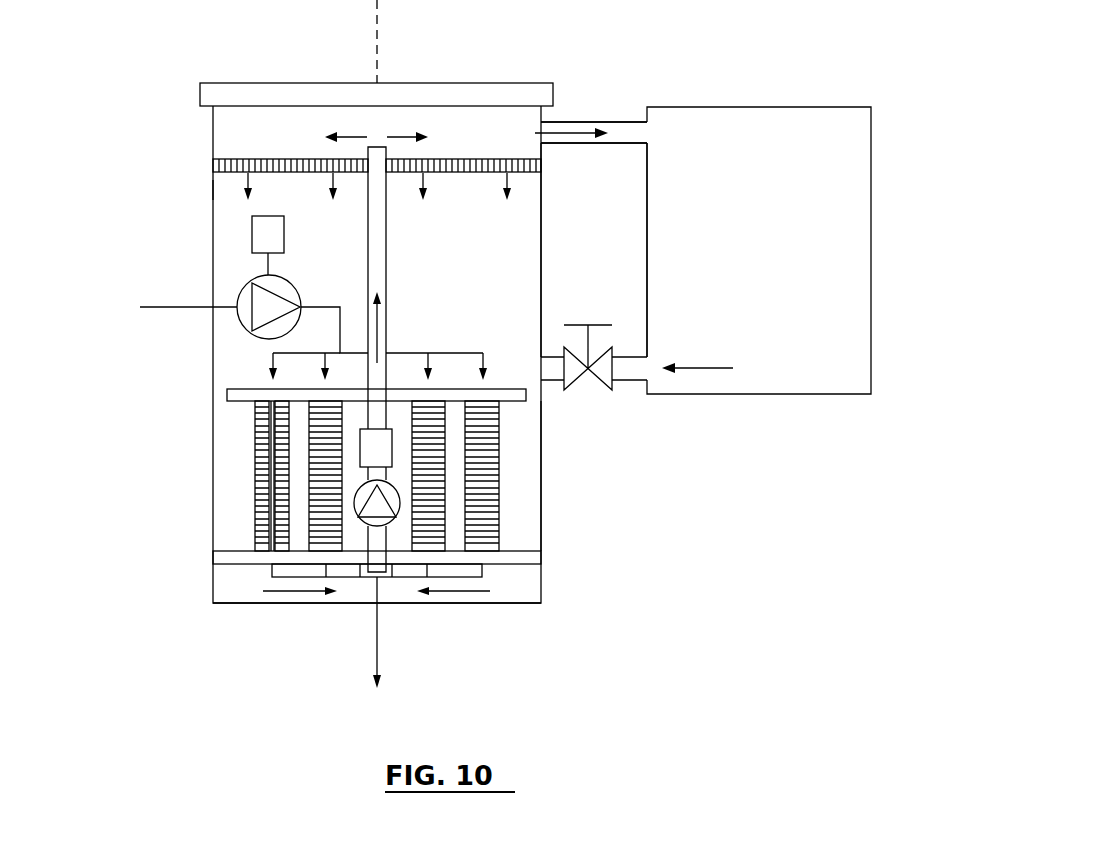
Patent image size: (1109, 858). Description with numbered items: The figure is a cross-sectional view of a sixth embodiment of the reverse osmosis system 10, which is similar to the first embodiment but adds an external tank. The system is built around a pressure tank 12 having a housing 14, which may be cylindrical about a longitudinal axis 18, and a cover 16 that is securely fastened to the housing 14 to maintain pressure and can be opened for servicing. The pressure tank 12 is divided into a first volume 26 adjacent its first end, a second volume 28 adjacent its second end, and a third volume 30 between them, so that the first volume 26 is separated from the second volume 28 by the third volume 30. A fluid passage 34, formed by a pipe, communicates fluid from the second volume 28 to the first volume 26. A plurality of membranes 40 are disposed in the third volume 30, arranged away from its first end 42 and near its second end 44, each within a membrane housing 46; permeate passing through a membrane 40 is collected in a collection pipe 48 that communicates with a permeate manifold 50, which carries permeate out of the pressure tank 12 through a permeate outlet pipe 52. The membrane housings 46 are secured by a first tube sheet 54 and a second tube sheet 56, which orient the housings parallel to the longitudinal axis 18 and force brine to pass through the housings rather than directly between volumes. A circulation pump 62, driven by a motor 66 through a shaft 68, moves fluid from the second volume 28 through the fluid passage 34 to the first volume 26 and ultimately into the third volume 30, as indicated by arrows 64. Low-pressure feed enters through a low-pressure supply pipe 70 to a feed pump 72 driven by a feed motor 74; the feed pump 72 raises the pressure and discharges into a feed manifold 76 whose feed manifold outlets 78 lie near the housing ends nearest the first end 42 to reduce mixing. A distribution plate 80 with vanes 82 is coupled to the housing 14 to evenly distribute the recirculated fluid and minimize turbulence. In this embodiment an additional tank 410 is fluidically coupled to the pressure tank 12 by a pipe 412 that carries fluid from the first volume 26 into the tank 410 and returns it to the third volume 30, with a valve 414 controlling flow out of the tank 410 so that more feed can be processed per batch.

The reverse osmosis system 10 is at (195, 67).
The pressure tank 12 is at (201, 113).
The housing 14 is at (213, 189).
The cover 16 is at (228, 93).
The longitudinal axis 18 is at (380, 17).
The first volume 26 is at (445, 114).
The second volume 28 is at (227, 593).
The third volume 30 is at (521, 225).
The fluid passage 34 is at (387, 260).
The membranes 40 is at (258, 421).
The first end 42 is at (523, 197).
The second end 44 is at (522, 533).
The membrane housing 46 is at (500, 425).
The collection pipe 48 is at (270, 455).
The permeate manifold 50 is at (347, 578).
The permeate outlet pipe 52 is at (380, 656).
The first tube sheet 54 is at (512, 393).
The second tube sheet 56 is at (523, 558).
The circulation pump 62 is at (400, 530).
The arrows 64 is at (350, 136).
The motor 66 is at (360, 440).
The shaft 68 is at (355, 505).
The low-pressure supply pipe 70 is at (165, 306).
The feed pump 72 is at (293, 288).
The feed motor 74 is at (252, 222).
The feed manifold 76 is at (334, 307).
The feed manifold outlets 78 is at (272, 360).
The distribution plate 80 is at (277, 163).
The vanes 82 is at (319, 163).
The tank 410 is at (738, 107).
The inlet pipe 412 is at (620, 120).
The valve 414 is at (605, 391).